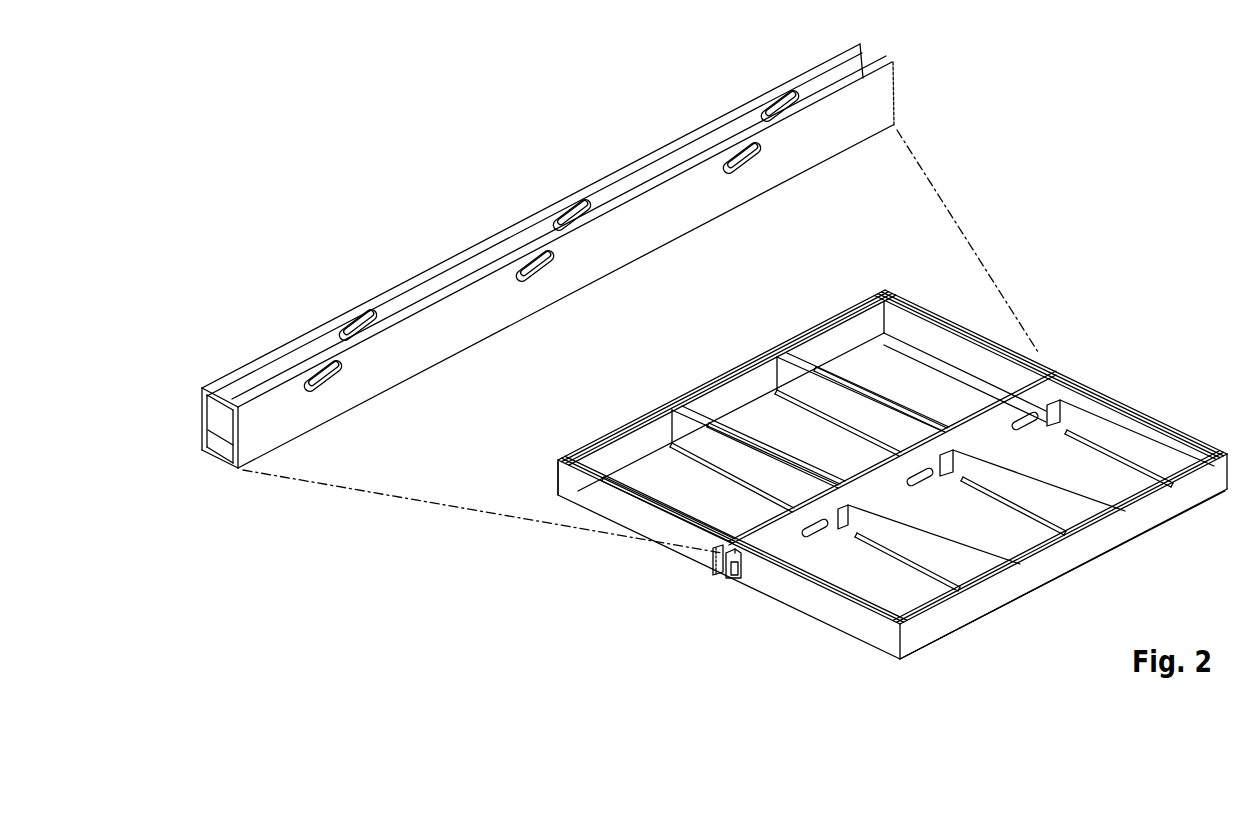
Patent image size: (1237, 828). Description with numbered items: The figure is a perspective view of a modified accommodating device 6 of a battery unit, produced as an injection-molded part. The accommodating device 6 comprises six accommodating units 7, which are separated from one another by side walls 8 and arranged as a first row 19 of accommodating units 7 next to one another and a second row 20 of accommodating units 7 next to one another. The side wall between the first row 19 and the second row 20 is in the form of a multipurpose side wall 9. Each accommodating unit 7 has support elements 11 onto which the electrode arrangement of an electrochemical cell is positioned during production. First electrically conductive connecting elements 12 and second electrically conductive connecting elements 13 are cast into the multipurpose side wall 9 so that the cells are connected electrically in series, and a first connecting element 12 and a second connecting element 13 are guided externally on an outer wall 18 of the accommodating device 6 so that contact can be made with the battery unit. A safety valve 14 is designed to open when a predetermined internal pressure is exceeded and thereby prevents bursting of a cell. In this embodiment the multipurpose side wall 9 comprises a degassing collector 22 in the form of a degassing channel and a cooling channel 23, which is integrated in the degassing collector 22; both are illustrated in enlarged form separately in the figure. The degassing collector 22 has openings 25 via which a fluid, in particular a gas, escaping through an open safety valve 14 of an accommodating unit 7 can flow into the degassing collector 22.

The accommodating device 6 is at (556, 478).
The accommodating unit 7 is at (628, 446).
The side wall 8 is at (680, 412).
The multipurpose side wall 9 is at (1023, 373).
The support element 11 is at (960, 370).
The first electrically conductive connecting element 12 is at (712, 562).
The second electrically conductive connecting element 13 is at (729, 579).
The safety valve 14 is at (818, 530).
The outer wall 18 is at (1050, 560).
The first row 19 is at (1178, 362).
The second row 20 is at (1027, 284).
The degassing collector 22 is at (650, 172).
The cooling channel 23 is at (222, 448).
The opening 25 is at (318, 372).